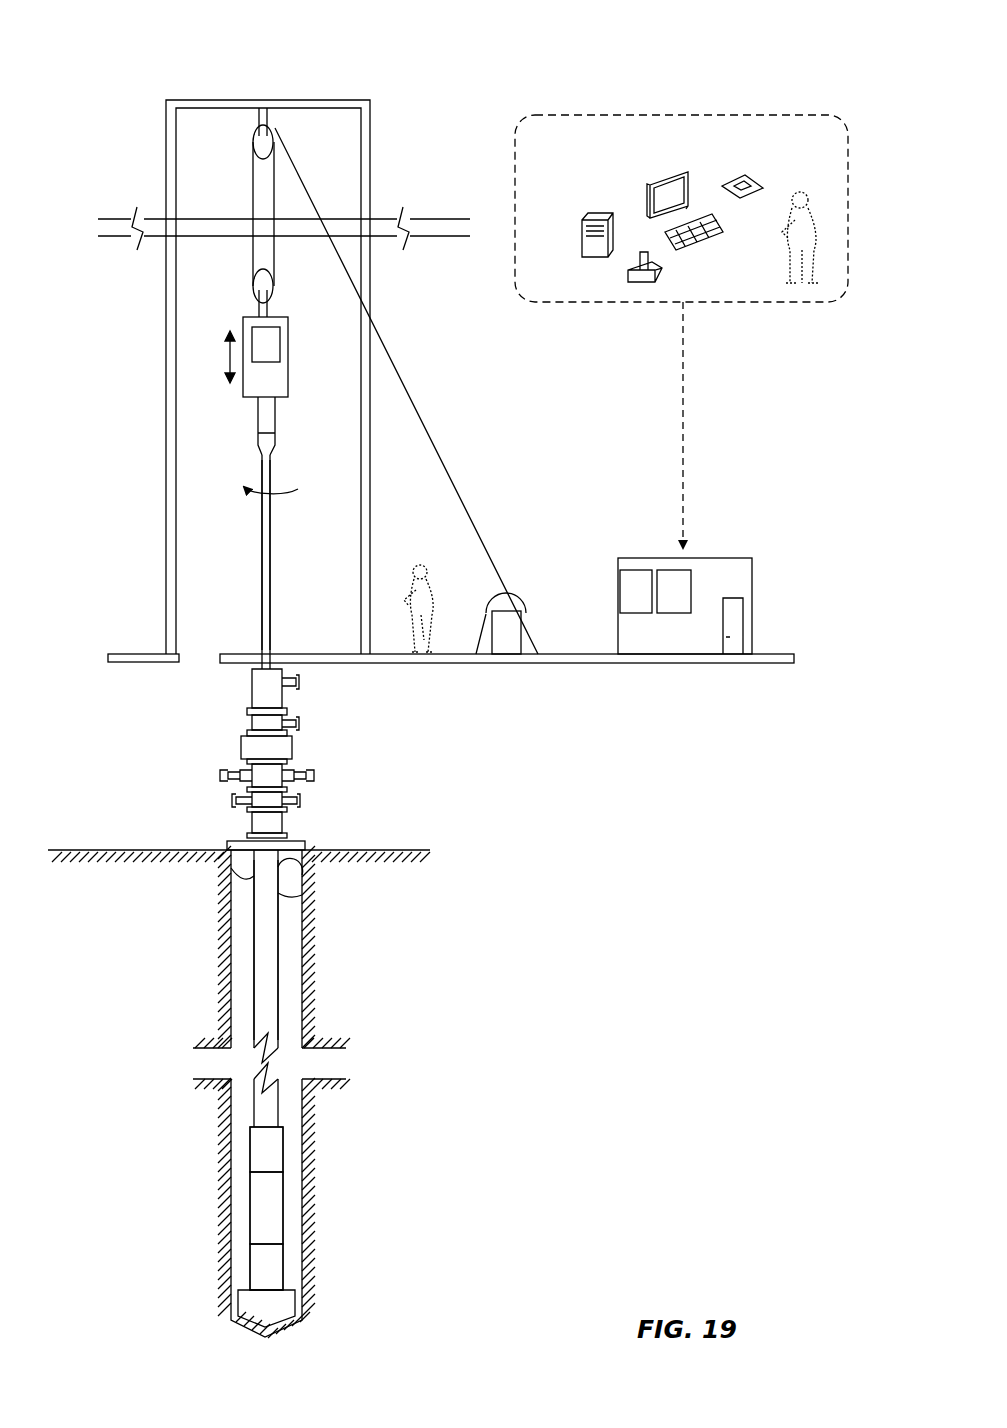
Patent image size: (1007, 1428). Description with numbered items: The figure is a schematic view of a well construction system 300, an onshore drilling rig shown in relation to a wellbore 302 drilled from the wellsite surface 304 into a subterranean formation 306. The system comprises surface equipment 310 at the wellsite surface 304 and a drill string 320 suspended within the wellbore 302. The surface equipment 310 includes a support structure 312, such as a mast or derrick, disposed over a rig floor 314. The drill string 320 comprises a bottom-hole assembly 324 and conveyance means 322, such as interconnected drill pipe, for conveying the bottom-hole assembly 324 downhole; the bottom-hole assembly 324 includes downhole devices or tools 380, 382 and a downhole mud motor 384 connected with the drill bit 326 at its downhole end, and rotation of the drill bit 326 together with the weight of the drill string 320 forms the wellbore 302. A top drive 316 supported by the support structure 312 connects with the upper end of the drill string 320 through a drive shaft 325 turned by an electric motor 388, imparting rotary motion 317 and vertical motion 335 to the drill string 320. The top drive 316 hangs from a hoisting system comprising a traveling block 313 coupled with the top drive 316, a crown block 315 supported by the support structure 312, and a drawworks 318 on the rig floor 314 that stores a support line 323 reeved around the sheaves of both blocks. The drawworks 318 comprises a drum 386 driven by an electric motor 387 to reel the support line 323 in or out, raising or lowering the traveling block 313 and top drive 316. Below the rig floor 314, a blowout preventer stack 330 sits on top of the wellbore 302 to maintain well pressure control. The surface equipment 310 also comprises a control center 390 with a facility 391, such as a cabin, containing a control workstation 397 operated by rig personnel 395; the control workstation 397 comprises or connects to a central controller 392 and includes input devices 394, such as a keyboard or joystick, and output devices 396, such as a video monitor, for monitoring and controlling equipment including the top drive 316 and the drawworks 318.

The well construction system 300 is at (143, 50).
The wellbore 302 is at (292, 912).
The wellsite surface 304 is at (338, 850).
The subterranean formation 306 is at (102, 901).
The surface equipment 310 is at (741, 396).
The support structure 312 is at (165, 134).
The traveling block 313 is at (255, 290).
The rig floor 314 is at (328, 654).
The crown block 315 is at (254, 142).
The top drive 316 is at (289, 373).
The rotary motion 317 is at (298, 489).
The drawworks 318 is at (540, 617).
The drill string 320 is at (259, 536).
The conveyance means 322 is at (261, 583).
The support line 323 is at (482, 520).
The bottom-hole assembly 324 is at (287, 1193).
The drive shaft 325 is at (258, 419).
The drill bit 326 is at (238, 1305).
The blowout preventer stack 330 is at (221, 775).
The vertical motion 335 is at (229, 357).
The downhole device or tool 380 is at (250, 1150).
The downhole device or tool 382 is at (250, 1208).
The downhole mud motor 384 is at (250, 1265).
The drum 386 is at (490, 602).
The electric motor 387 is at (507, 643).
The electric motor 388 is at (283, 345).
The control center 390 is at (788, 594).
The facility 391 is at (708, 558).
The central controller 392 is at (582, 228).
The input device 394 is at (748, 178).
The rig personnel 395 is at (418, 563).
The output device 396 is at (650, 190).
The control workstation 397 is at (710, 155).